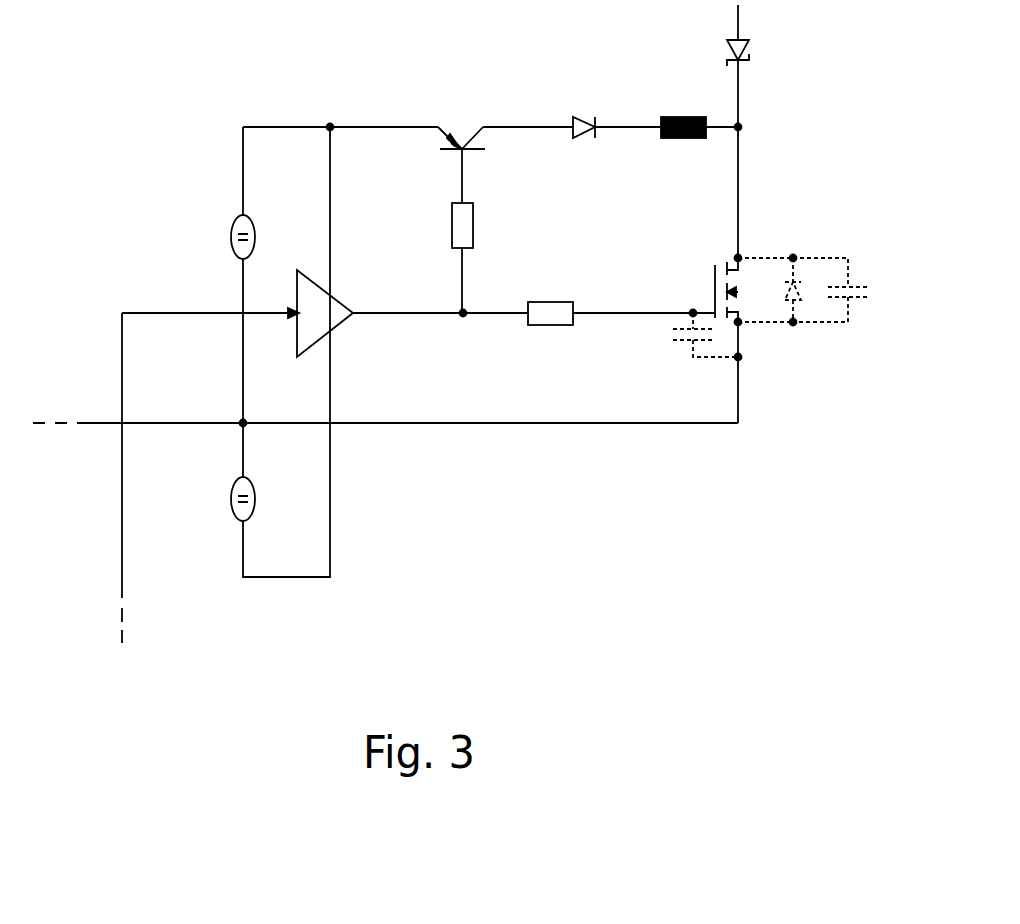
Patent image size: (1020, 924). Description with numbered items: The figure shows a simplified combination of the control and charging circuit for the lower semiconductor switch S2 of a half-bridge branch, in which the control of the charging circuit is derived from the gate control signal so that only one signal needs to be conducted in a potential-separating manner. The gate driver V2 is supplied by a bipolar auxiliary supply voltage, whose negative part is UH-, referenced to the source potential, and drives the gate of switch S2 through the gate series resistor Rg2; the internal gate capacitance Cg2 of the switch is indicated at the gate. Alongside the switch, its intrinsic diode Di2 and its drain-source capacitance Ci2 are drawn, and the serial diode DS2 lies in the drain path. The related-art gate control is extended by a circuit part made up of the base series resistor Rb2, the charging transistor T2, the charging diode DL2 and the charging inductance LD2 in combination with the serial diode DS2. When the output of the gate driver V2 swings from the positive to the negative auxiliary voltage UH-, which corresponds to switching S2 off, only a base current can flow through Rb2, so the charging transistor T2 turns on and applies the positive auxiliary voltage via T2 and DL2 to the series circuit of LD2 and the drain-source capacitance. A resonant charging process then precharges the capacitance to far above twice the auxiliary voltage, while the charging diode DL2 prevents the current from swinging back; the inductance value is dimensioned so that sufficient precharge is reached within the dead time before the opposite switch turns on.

The negative auxiliary voltage supply UH- is at (210, 467).
The gate driver V2 is at (338, 320).
The charging transistor T2 is at (461, 145).
The base series resistor Rb2 is at (440, 255).
The charging diode DL2 is at (579, 108).
The charging inductance LD2 is at (683, 106).
The lower serial diode DS2 is at (772, 59).
The lower switch of half-bridge S2 is at (744, 290).
The intrinsic diode of S2 Di2 is at (773, 269).
The drain-source capacitance of S2 Ci2 is at (831, 267).
The gate capacitance Cg2 is at (702, 352).
The gate series resistor Rg2 is at (552, 292).